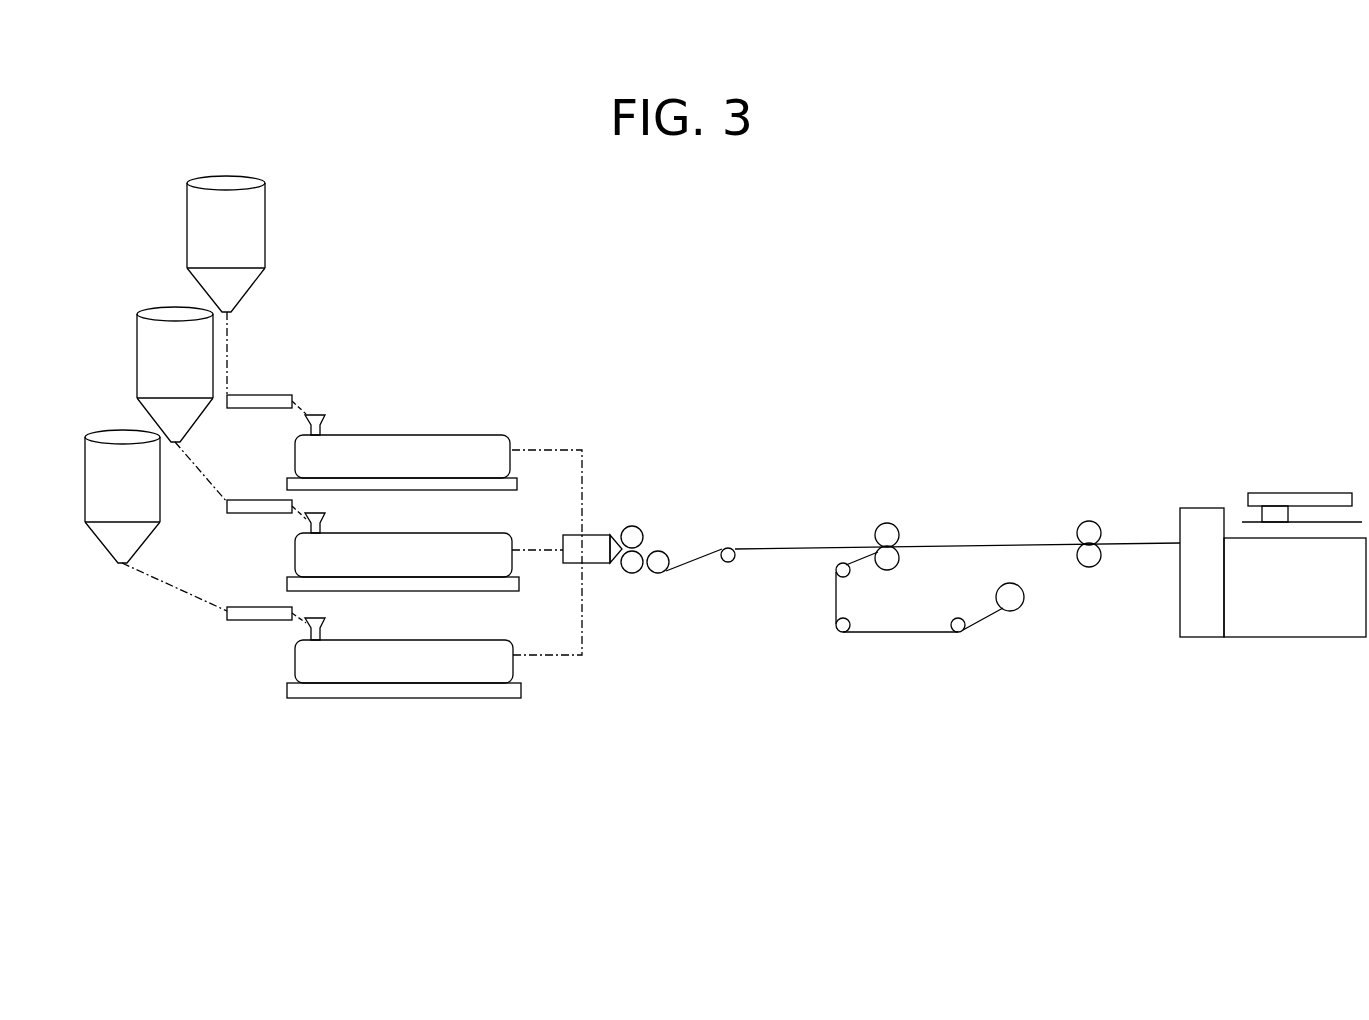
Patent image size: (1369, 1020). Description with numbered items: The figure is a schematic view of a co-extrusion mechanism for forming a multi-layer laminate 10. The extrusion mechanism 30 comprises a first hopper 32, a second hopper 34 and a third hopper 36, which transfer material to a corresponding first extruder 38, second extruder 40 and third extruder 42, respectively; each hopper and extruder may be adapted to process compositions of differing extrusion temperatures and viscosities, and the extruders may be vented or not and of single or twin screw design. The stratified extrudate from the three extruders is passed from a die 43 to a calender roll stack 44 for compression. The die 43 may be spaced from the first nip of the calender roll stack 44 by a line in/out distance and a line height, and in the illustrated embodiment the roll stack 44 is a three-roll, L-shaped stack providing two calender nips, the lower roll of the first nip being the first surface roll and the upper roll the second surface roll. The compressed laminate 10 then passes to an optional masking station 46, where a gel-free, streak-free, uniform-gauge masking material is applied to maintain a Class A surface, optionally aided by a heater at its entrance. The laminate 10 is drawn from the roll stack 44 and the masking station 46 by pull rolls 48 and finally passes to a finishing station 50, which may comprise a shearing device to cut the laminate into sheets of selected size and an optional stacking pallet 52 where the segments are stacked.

The multi-layer laminate 10 is at (781, 547).
The extrusion mechanism 30 is at (607, 410).
The first hopper 32 is at (95, 471).
The second hopper 34 is at (147, 372).
The third hopper 36 is at (254, 237).
The first extruder 38 is at (434, 640).
The second extruder 40 is at (432, 533).
The third extruder 42 is at (420, 436).
The die 43 is at (598, 535).
The calender roll stack 44 is at (633, 583).
The masking station 46 is at (910, 524).
The pull rolls 48 is at (1076, 503).
The finishing station 50 is at (1212, 618).
The stacking pallet 52 is at (1270, 482).